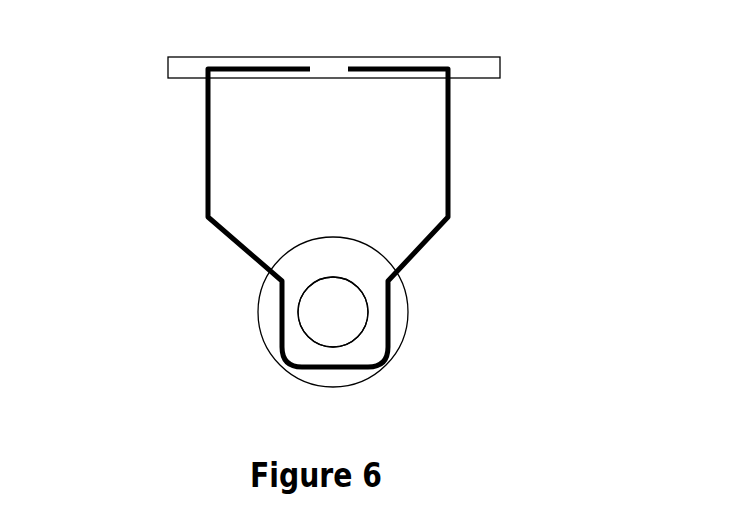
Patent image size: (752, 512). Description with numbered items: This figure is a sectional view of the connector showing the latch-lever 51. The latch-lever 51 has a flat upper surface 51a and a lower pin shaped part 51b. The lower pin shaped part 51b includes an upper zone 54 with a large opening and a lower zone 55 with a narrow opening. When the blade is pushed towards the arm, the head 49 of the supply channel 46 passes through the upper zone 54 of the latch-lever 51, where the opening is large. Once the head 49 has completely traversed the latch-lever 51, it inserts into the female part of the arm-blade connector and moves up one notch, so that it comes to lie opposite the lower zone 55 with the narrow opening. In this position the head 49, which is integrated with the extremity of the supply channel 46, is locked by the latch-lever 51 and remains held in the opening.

The latch-lever 51 is at (533, 146).
The flat upper surface 51a is at (168, 73).
The lower pin shaped part 51b is at (206, 146).
The upper zone 54 is at (326, 150).
The lower zone 55 is at (272, 318).
The head 49 is at (362, 278).
The supply channel 46 is at (343, 317).